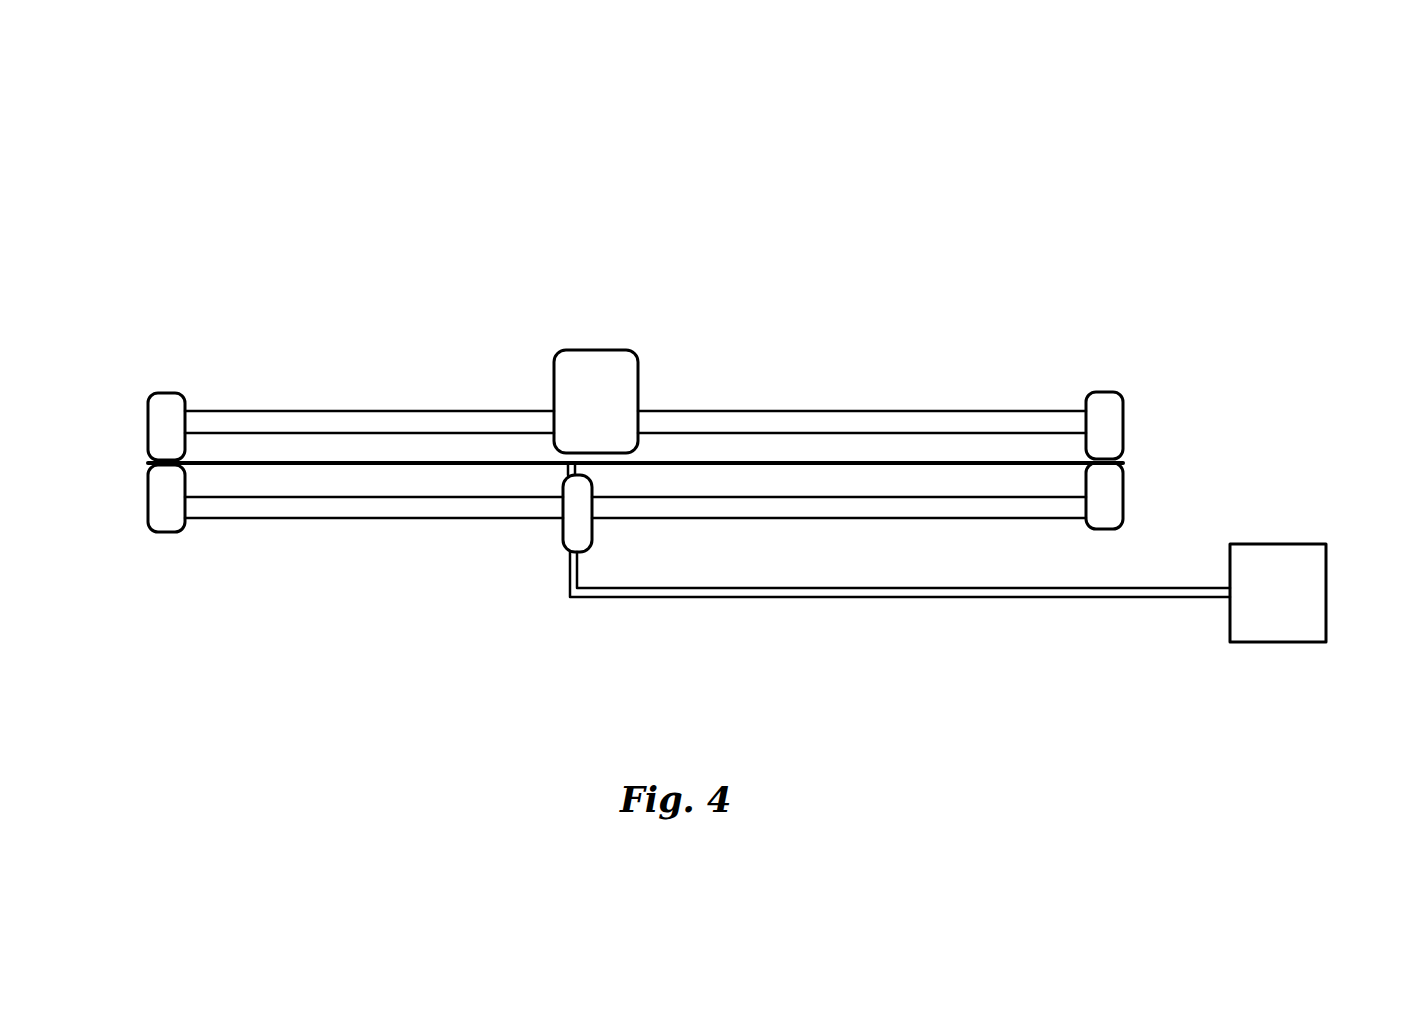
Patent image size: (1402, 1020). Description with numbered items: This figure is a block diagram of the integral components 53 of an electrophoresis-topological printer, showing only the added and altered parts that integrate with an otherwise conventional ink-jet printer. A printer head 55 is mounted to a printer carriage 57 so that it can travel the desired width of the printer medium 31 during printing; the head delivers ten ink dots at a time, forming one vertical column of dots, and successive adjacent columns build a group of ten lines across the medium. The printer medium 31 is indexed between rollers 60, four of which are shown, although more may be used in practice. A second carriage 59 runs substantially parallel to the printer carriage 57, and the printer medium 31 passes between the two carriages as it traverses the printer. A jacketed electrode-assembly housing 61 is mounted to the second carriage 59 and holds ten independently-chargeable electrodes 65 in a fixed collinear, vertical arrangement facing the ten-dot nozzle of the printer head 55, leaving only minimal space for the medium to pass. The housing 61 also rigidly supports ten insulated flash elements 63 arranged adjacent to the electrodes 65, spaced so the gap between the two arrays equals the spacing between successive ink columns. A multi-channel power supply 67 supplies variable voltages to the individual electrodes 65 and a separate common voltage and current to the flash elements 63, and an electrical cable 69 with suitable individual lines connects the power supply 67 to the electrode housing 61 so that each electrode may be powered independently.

The integral components 53 is at (837, 212).
The printer head 55 is at (595, 350).
The printer carriage 57 is at (427, 418).
The second carriage 59 is at (398, 512).
The rollers 60 is at (147, 432).
The printer medium 31 is at (1123, 460).
The jacketed electrode-assembly housing 61 is at (563, 527).
The insulated flash elements 63 is at (562, 470).
The independently-chargeable electrodes 65 is at (583, 470).
The multi-channel power supply 67 is at (1326, 595).
The electrical cable 69 is at (832, 598).